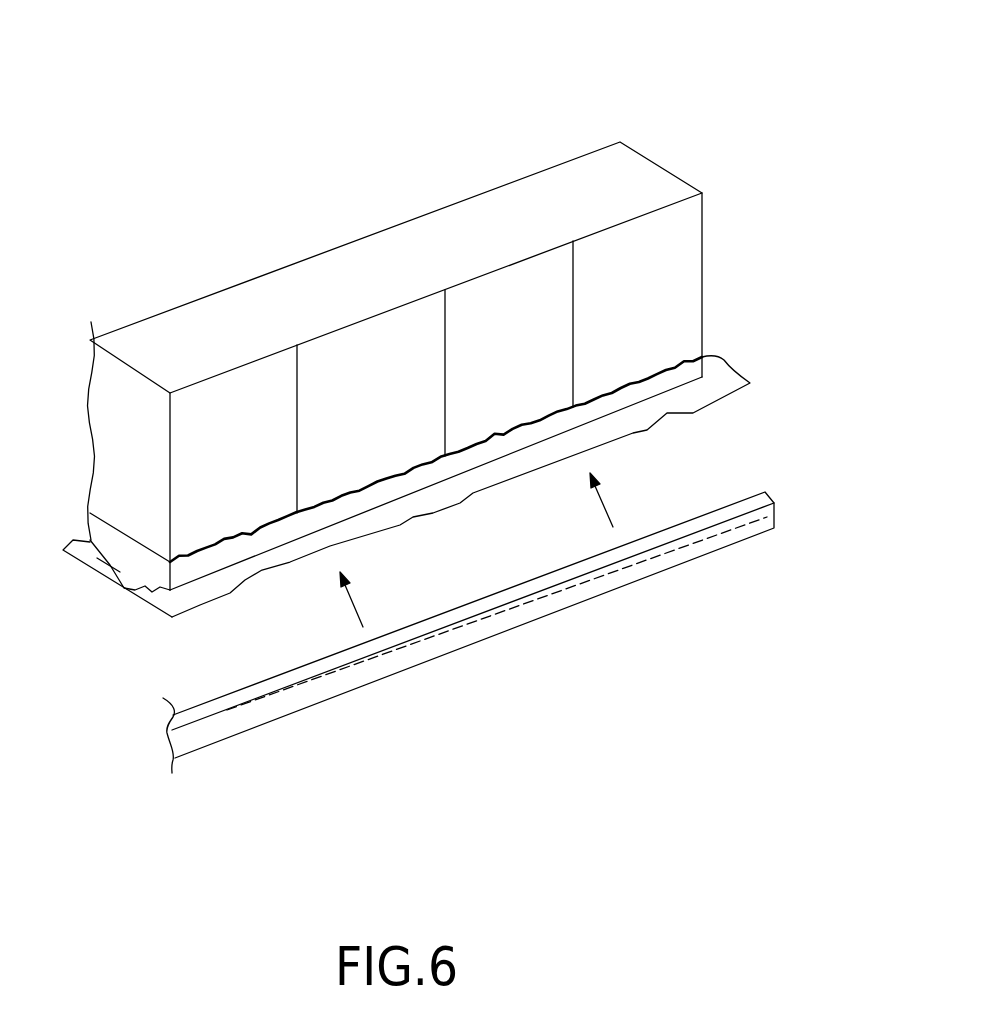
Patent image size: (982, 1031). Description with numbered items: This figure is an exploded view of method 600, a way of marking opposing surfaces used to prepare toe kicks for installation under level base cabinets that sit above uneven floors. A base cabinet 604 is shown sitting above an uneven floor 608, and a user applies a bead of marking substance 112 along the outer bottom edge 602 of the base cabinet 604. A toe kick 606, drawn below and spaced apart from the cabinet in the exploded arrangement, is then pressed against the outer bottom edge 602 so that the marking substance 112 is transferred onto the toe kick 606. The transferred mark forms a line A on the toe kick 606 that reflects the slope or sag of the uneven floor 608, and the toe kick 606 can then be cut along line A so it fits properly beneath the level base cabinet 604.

The method 600 is at (460, 396).
The base cabinet 604 is at (702, 223).
The outer bottom edge 602 is at (175, 562).
The marking substance 112 is at (702, 357).
The uneven floor 608 is at (97, 558).
The toe kick 606 is at (534, 622).
The line A is at (548, 593).